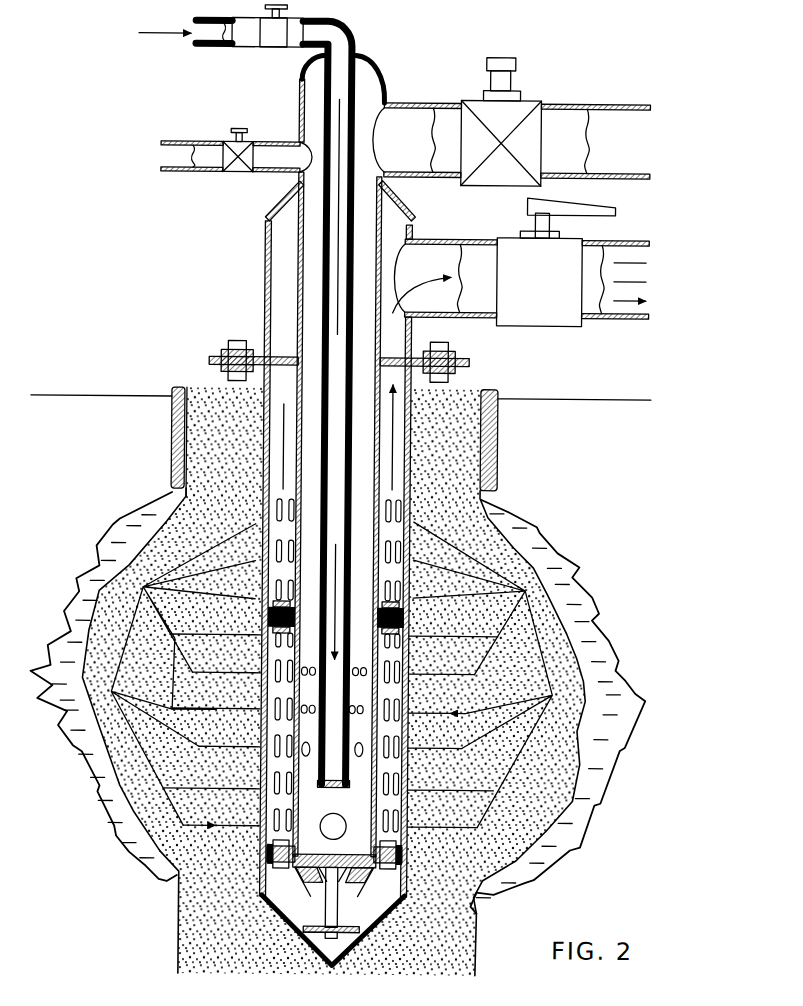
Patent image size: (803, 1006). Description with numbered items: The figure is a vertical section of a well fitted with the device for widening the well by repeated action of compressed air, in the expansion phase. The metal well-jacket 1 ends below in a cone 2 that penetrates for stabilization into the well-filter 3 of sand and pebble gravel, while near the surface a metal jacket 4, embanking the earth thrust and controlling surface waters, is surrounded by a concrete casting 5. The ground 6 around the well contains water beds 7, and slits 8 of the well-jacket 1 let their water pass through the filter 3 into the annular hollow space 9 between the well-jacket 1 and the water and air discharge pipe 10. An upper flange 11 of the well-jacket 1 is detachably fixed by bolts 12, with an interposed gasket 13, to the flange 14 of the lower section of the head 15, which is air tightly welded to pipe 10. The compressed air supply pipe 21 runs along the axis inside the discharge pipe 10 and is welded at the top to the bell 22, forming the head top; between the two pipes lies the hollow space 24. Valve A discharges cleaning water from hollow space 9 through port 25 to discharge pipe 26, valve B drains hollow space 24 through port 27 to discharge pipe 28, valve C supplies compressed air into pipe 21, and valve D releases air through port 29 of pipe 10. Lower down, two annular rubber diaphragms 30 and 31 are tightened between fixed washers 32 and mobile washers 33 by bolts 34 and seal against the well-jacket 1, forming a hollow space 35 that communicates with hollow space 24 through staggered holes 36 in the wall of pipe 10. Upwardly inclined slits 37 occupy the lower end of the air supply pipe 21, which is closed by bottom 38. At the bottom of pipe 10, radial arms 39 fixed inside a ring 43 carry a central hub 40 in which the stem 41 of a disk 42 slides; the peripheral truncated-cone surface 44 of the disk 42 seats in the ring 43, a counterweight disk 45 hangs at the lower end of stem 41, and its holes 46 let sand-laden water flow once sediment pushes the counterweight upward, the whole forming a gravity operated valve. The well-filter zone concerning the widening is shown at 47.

The well-jacket 1 is at (410, 466).
The cone 2 is at (479, 937).
The well-filter 3 is at (181, 940).
The metal jacket 4 is at (186, 465).
The concrete casting 5 is at (171, 432).
The ground 6 is at (52, 445).
The water beds 7 is at (72, 636).
The slits 8 is at (288, 522).
The annular hollow space 9 is at (405, 449).
The water and air discharge pipe 10 is at (298, 278).
The upper flange 11 is at (218, 366).
The bolts 12 is at (237, 342).
The gasket 13 is at (218, 360).
The flange 14 is at (226, 355).
The head 15 is at (266, 305).
The air supply pipe 21 is at (322, 245).
The bell 22 is at (378, 72).
The hollow space 24 is at (403, 216).
The port 25 is at (394, 277).
The discharge pipe 26 is at (641, 318).
The port 27 is at (364, 148).
The discharge pipe 28 is at (635, 104).
The port 29 is at (298, 155).
The annular rubber diaphragm 30 is at (410, 862).
The annular rubber diaphragm 31 is at (407, 619).
The fixed washers 32 is at (270, 612).
The mobile washers 33 is at (278, 626).
The bolts 34 is at (405, 900).
The hollow space 35 is at (410, 696).
The holes 36 is at (357, 667).
The upwardly inclined slits 37 is at (272, 742).
The bottom 38 is at (336, 787).
The radial arms 39 is at (316, 880).
The central hub 40 is at (329, 880).
The stem 41 is at (355, 918).
The disk 42 is at (338, 860).
The ring 43 is at (382, 900).
The peripheral truncated-cone surface 44 is at (352, 878).
The counterweight disk 45 is at (307, 930).
The holes 46 is at (312, 936).
The well-filter zone 47 is at (107, 759).
The valve A is at (500, 295).
The valve B is at (467, 157).
The valve C is at (270, 42).
The valve D is at (230, 158).